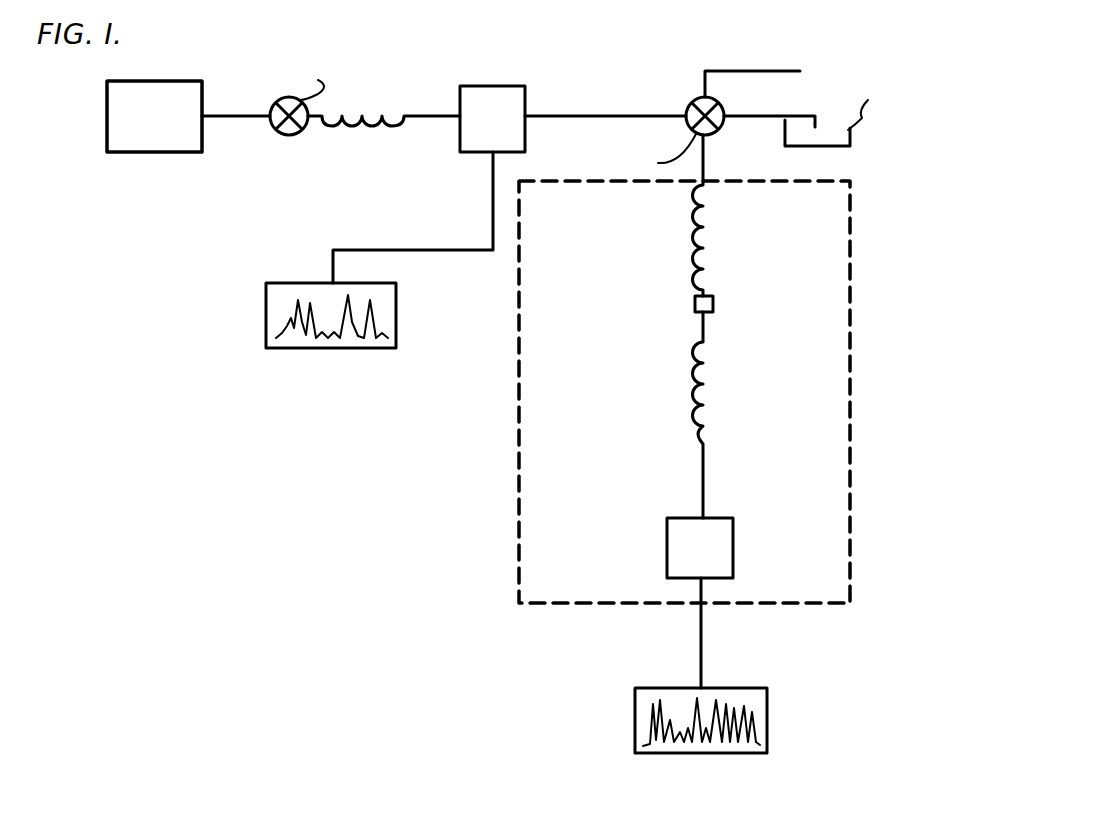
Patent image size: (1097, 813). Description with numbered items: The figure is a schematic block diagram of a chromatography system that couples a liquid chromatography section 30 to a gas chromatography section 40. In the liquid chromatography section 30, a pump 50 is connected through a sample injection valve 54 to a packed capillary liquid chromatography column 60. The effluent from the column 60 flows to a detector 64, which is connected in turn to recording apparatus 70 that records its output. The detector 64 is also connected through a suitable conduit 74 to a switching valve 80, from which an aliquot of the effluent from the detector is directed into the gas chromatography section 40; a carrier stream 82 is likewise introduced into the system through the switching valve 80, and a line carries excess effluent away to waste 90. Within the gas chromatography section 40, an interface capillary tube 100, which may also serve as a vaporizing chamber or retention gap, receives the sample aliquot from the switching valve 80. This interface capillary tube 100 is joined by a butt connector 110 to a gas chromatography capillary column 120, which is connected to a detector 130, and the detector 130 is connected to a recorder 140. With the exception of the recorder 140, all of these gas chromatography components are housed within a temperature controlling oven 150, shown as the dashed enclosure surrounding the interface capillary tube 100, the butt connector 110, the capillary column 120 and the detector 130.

The liquid chromatography section 30 is at (583, 54).
The gas chromatography section 40 is at (487, 462).
The pump 50 is at (107, 134).
The sample injection valve 54 is at (276, 130).
The packed capillary liquid chromatography column 60 is at (398, 130).
The detector 64 is at (510, 125).
The recording apparatus 70 is at (396, 323).
The conduit 74 is at (605, 97).
The switching valve 80 is at (722, 104).
The carrier stream 82 is at (815, 53).
The waste 90 is at (850, 140).
The interface capillary tube 100 is at (707, 234).
The butt connector 110 is at (713, 306).
The gas chromatography capillary column 120 is at (704, 400).
The detector 130 is at (718, 560).
The recorder 140 is at (767, 712).
The temperature controlling oven 150 is at (850, 404).